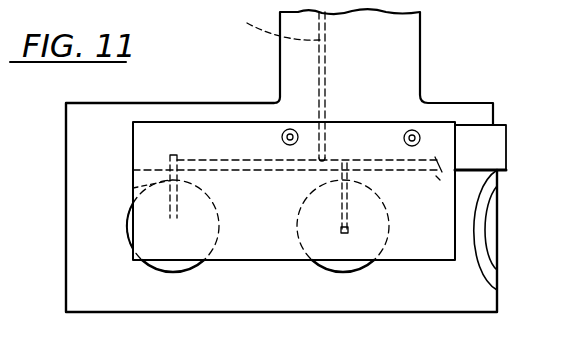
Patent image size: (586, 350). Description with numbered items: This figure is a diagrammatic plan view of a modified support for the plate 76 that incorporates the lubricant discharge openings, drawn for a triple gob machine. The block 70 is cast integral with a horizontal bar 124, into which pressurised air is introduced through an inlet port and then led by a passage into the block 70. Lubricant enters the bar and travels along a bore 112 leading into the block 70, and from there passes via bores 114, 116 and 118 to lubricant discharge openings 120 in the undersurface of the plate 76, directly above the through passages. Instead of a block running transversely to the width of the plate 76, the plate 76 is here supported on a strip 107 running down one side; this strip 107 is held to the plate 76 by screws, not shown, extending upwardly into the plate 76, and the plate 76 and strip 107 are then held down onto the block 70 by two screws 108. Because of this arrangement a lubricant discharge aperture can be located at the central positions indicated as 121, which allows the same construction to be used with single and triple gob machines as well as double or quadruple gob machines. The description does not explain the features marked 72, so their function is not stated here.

The block 70 is at (140, 113).
The wheels 72 is at (160, 268).
The plate 76 is at (219, 128).
The strip 107 is at (187, 130).
The screws 108 is at (286, 128).
The bore 112 is at (261, 24).
The bore 114 is at (326, 157).
The bore 116 is at (263, 190).
The bore 118 is at (133, 188).
The lubricant discharge openings 120 is at (173, 228).
The central positions 121 is at (334, 270).
The horizontal bar 124 is at (410, 51).